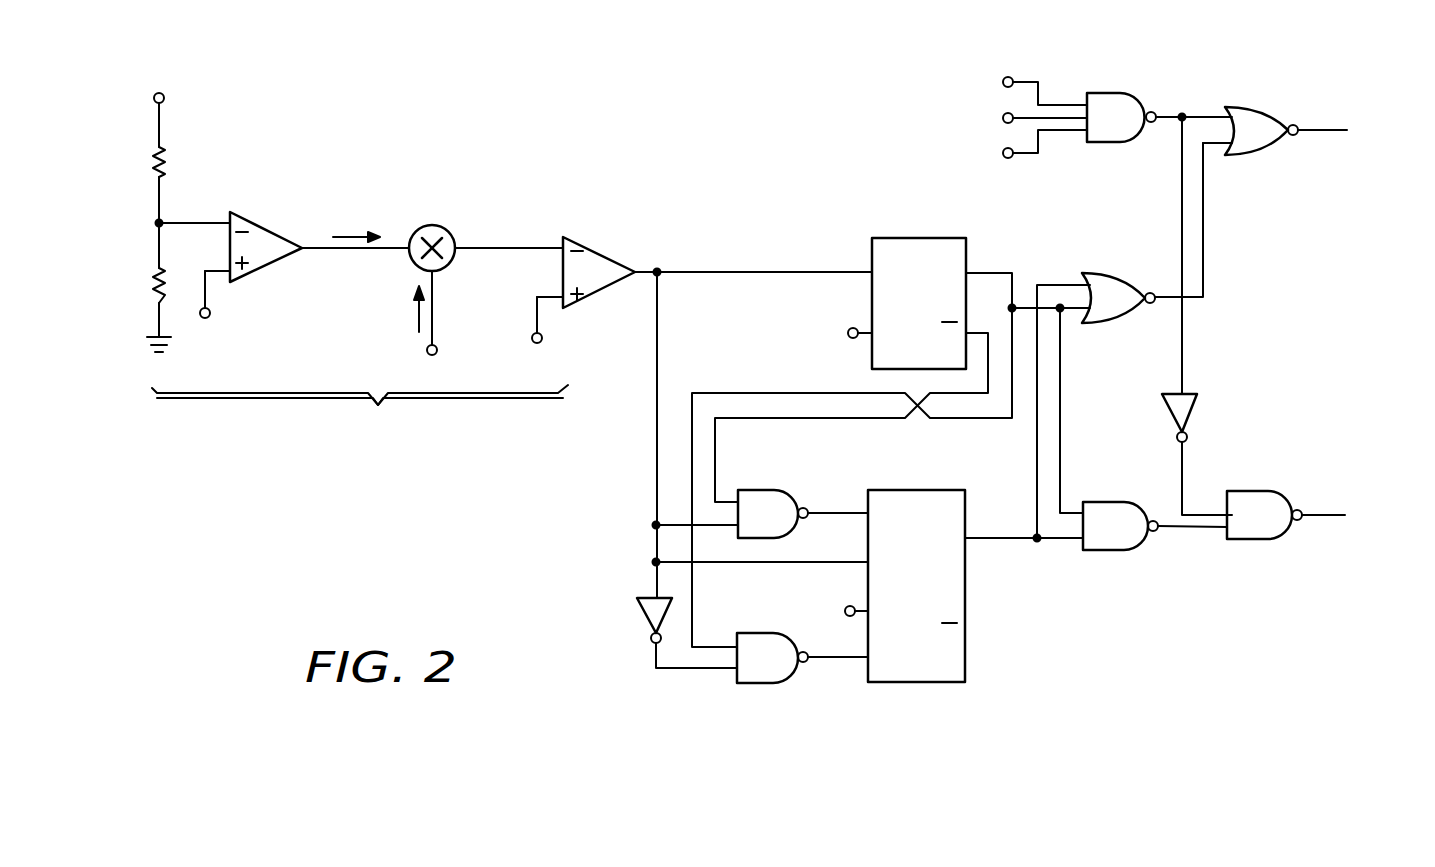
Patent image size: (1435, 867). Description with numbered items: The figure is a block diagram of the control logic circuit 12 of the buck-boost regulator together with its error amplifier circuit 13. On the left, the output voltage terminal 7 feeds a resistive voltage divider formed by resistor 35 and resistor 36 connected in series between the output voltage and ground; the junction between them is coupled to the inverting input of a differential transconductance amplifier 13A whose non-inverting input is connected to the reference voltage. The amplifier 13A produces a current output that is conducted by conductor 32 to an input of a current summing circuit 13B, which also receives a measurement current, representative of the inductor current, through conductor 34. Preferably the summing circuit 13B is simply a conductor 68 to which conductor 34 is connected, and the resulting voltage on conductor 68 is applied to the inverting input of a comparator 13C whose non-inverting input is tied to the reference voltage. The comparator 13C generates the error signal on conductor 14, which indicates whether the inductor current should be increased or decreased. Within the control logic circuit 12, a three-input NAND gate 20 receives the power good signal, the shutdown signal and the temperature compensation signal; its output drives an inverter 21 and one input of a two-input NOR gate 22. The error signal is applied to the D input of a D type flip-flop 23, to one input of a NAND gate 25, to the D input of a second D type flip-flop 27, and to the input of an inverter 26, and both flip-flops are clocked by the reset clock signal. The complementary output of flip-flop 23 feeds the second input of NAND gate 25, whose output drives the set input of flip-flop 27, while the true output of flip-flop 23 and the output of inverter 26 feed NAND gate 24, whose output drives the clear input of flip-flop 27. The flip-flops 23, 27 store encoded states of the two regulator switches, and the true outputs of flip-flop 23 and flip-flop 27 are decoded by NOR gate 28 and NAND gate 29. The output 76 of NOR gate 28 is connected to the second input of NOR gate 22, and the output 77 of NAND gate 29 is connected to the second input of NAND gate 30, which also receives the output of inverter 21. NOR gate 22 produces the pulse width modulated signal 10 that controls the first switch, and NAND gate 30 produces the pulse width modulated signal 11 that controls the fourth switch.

The output voltage terminal VOUT 7 is at (152, 97).
The resistor 35 is at (152, 157).
The resistor 36 is at (152, 281).
The differential transconductance amplifier 13A is at (263, 228).
The current summing circuit 13B is at (425, 226).
The comparator 13C is at (600, 255).
The conductor 32 is at (333, 250).
The conductor 68 is at (487, 247).
The conductor 34 is at (424, 352).
The error amplifier circuit 13 is at (360, 411).
The conductor 14 is at (651, 278).
The control logic circuit 12 is at (416, 580).
The D type flip-flop 23 is at (913, 237).
The NAND gate 20 is at (1107, 92).
The NOR gate 22 is at (1250, 103).
The pulse width modulated signal 10 is at (1322, 128).
The NOR gate 28 is at (1102, 272).
The output of NOR gate 28 76 is at (1205, 283).
The inverter 21 is at (1170, 416).
The NAND gate 25 is at (765, 488).
The inverter 26 is at (645, 617).
The NAND gate 24 is at (753, 685).
The D type flip-flop 27 is at (912, 685).
The NAND gate 29 is at (1110, 553).
The output of NAND gate 29 77 is at (1183, 530).
The NAND gate 30 is at (1253, 541).
The pulse width modulated signal 11 is at (1320, 520).